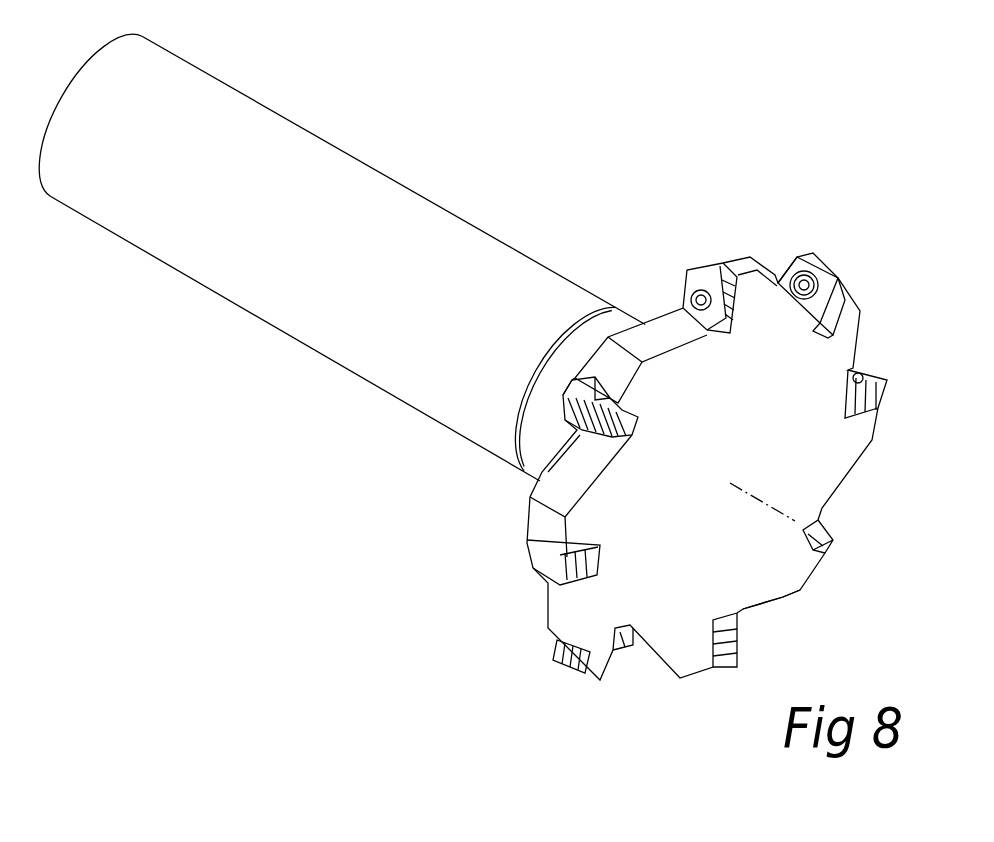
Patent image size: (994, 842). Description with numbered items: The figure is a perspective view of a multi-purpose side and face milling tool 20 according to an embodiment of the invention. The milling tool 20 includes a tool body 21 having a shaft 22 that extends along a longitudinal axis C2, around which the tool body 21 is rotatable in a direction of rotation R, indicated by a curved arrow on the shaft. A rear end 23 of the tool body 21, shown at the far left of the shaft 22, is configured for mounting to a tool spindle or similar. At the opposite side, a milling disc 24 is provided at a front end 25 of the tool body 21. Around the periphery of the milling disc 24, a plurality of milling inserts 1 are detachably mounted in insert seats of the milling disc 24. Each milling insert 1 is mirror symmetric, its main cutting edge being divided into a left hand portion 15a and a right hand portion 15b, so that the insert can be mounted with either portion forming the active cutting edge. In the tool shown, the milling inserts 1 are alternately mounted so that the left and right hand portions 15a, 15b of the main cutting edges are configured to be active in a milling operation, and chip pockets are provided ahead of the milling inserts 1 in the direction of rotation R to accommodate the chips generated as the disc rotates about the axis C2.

The milling insert 1 is at (821, 270).
The left hand portion of the main cutting edge 15a is at (713, 288).
The right hand portion of the main cutting edge 15b is at (806, 257).
The multi-purpose side and face milling tool 20 is at (457, 161).
The tool body 21 is at (520, 283).
The shaft 22 is at (253, 130).
The rear end 23 is at (70, 78).
The milling disc 24 is at (730, 260).
The front end 25 is at (768, 577).
The longitudinal axis C2 is at (766, 493).
The direction of rotation R is at (477, 276).